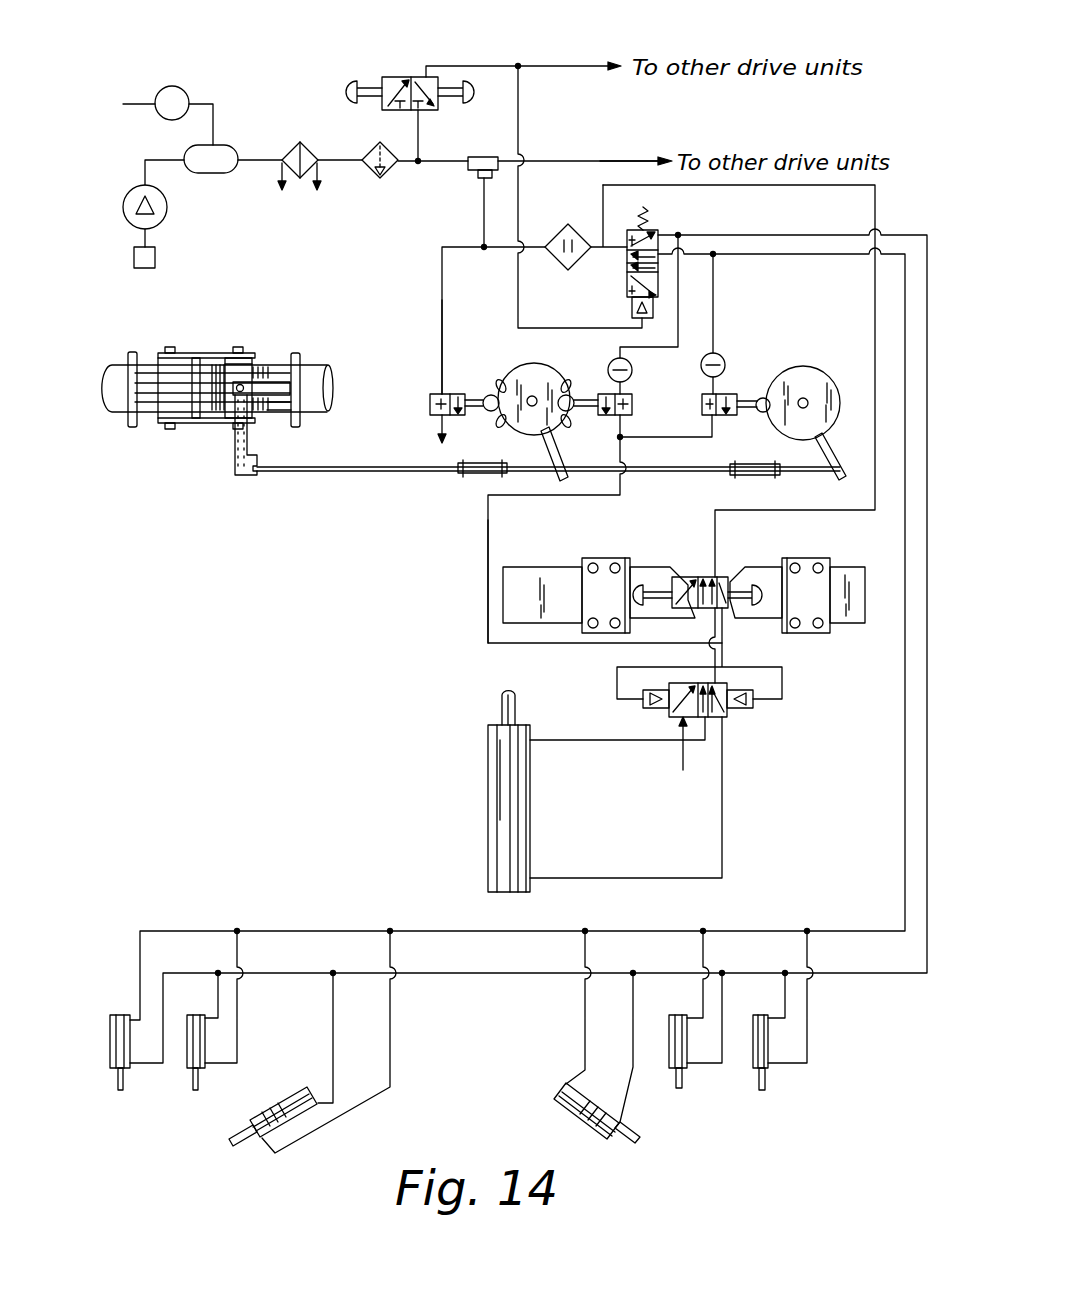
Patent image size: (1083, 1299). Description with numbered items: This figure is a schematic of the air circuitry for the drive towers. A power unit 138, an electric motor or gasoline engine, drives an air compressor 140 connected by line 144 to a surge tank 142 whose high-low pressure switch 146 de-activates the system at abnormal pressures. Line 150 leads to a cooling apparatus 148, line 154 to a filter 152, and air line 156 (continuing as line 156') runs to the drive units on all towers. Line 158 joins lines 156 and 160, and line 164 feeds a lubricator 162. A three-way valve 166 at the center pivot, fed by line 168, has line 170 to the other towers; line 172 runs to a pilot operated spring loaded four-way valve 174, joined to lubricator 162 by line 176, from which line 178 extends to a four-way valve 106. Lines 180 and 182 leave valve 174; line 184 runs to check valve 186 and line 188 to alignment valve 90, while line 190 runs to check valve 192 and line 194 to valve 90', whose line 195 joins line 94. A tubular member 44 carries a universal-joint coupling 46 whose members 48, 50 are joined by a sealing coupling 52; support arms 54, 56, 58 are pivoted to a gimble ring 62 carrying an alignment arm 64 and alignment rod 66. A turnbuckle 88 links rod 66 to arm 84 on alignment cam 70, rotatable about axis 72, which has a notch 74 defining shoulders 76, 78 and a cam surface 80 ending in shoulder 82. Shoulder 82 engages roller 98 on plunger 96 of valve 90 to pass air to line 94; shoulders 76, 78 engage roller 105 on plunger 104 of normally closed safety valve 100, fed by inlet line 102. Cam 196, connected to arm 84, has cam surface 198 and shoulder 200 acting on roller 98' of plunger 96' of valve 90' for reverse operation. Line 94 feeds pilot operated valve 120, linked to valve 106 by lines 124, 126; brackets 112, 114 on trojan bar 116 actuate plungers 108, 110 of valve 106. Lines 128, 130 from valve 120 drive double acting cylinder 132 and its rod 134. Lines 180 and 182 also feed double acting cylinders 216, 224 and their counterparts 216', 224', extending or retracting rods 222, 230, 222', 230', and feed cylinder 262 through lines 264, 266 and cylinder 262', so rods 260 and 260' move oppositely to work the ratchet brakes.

The tubular member 44 is at (330, 368).
The universal-joint coupling 46 is at (251, 338).
The member 48 is at (155, 403).
The member 50 is at (280, 414).
The sealing coupling 52 is at (272, 385).
The support arm 54 is at (187, 349).
The support arm 56 is at (190, 426).
The support arm 58 is at (282, 398).
The gimble ring 62 is at (253, 360).
The alignment arm 64 is at (233, 455).
The alignment rod 66 is at (353, 470).
The alignment cam 70 is at (522, 372).
The horizontal axis 72 is at (535, 396).
The notch 74 is at (485, 414).
The shoulder 76 is at (500, 385).
The shoulder 78 is at (500, 426).
The cam surface 80 is at (560, 432).
The shoulder 82 is at (562, 388).
The arm 84 is at (548, 446).
The turnbuckle 88 is at (480, 475).
The alignment valve 90 is at (641, 403).
The valve 90' is at (699, 414).
The line 94 is at (582, 495).
The plunger 96 is at (589, 390).
The plunger 96' is at (750, 383).
The roller 98 is at (581, 422).
The roller 98' is at (745, 421).
The safety valve 100 is at (430, 408).
The air inlet line 102 is at (442, 272).
The plunger 104 is at (471, 395).
The roller 105 is at (490, 392).
The four-way valve 106 is at (697, 566).
The plunger 108 is at (652, 590).
The plunger 110 is at (742, 590).
The bracket 112 is at (627, 563).
The bracket 114 is at (788, 562).
The trojan bar 116 is at (507, 600).
The pilot operated valve 120 is at (676, 758).
The air line 124 is at (617, 684).
The air line 126 is at (782, 680).
The air line 128 is at (573, 742).
The air line 130 is at (645, 878).
The double acting air cylinder 132 is at (497, 777).
The rod 134 is at (507, 702).
The power unit 138 is at (155, 258).
The air compressor 140 is at (122, 218).
The surge tank 142 is at (218, 175).
The line 144 is at (145, 160).
The high-low pressure switch 146 is at (185, 95).
The cooling coil or apparatus 148 is at (320, 132).
The line 150 is at (259, 158).
The filter 152 is at (388, 178).
The line 154 is at (340, 165).
The air line 156 is at (535, 183).
The line 156' is at (637, 135).
The line 158 is at (483, 210).
The line 160 is at (495, 157).
The lubricator 162 is at (580, 240).
The line 164 is at (534, 253).
The three-way valve 166 is at (398, 76).
The line 168 is at (420, 137).
The line 170 is at (553, 66).
The line 172 is at (521, 203).
The pilot operated spring loaded four-way valve 174 is at (658, 230).
The line 176 is at (614, 250).
The line 178 is at (878, 213).
The line 180 is at (782, 256).
The line 182 is at (800, 236).
The line 184 is at (679, 323).
The check valve 186 is at (611, 358).
The line 188 is at (632, 376).
The line 190 is at (716, 313).
The check valve 192 is at (718, 356).
The line 194 is at (710, 379).
The line 195 is at (693, 438).
The alignment cam 196 is at (822, 375).
The cam surface 198 is at (755, 462).
The shoulder 200 is at (772, 385).
The cylinder 216 is at (90, 1054).
The sensor 216' is at (706, 1065).
The rod 222 is at (89, 1098).
The probe 222' is at (698, 1107).
The cylinder 224 is at (175, 1072).
The sensor 224' is at (813, 1059).
The rod 230 is at (230, 1083).
The probe 230' is at (809, 1101).
The rod 260 is at (235, 1164).
The rod 260' is at (608, 1148).
The air cylinder 262 is at (283, 1090).
The cylinder 262' is at (568, 1116).
The line 264 is at (390, 1067).
The line 266 is at (333, 1040).